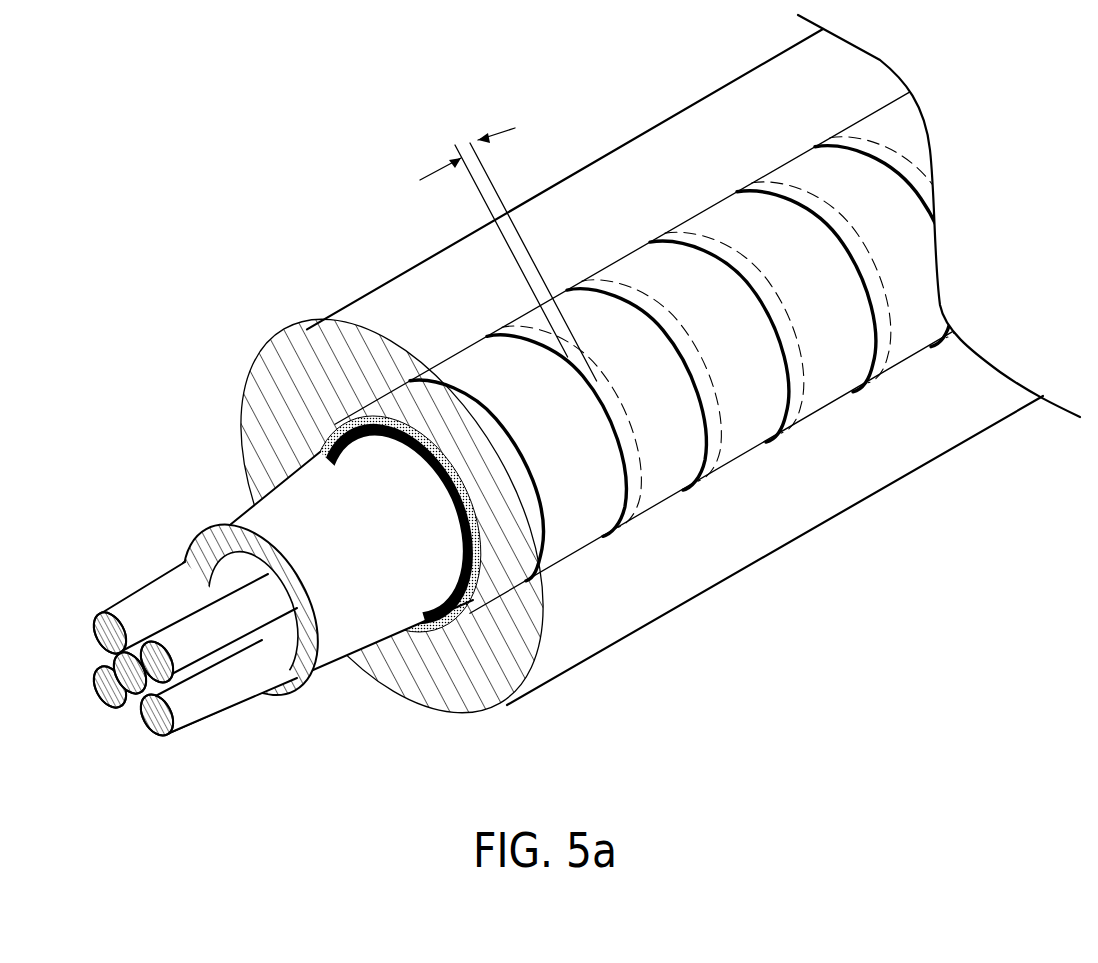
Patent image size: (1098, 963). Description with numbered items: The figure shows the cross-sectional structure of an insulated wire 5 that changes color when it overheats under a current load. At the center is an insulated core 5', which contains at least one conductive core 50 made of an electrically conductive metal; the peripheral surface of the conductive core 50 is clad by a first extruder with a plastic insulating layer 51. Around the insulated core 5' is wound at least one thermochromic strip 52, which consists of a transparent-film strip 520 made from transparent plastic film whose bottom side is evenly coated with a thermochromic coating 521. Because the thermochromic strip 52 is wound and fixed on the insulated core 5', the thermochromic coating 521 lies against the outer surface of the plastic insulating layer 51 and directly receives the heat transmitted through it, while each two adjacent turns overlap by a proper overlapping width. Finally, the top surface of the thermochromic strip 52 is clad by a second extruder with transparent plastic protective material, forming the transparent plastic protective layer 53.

The insulated wire 5 is at (587, 432).
The insulated core 5' is at (283, 650).
The conductive core 50 is at (112, 697).
The plastic insulating layer 51 is at (293, 676).
The thermochromic strip 52 is at (677, 433).
The transparent-film strip 520 is at (500, 645).
The thermochromic coating 521 is at (440, 630).
The transparent plastic protective layer 53 is at (326, 351).